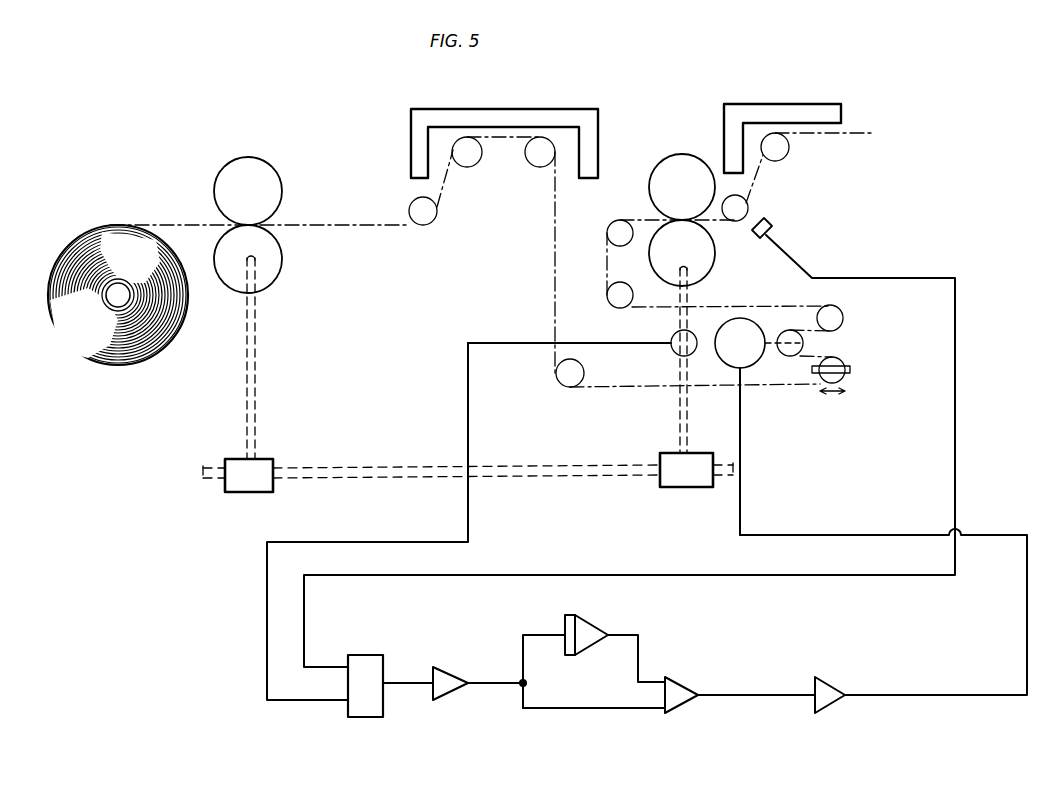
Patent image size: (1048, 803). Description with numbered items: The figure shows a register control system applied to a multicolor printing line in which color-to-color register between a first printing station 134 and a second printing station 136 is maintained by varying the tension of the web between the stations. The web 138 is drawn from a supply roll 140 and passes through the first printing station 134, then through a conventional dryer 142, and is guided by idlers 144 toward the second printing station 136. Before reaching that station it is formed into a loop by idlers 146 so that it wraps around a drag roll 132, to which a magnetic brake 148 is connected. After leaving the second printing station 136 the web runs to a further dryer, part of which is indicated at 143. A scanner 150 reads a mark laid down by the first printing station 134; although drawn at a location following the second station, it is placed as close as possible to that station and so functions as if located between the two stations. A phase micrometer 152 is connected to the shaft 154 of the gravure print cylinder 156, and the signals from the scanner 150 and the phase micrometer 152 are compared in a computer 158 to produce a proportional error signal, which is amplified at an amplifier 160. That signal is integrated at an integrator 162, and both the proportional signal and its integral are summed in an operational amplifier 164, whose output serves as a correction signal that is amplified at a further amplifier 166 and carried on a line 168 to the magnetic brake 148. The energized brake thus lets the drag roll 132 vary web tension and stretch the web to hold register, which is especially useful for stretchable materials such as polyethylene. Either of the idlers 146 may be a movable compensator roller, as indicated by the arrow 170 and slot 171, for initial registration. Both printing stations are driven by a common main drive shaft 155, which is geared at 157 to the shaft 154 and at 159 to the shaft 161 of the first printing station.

The drag roll 132 is at (803, 343).
The first printing station 134 is at (270, 168).
The second printing station 136 is at (680, 154).
The web 138 is at (362, 221).
The supply roll 140 is at (150, 364).
The dryer 142 is at (485, 109).
The dryer 143 is at (778, 104).
The idlers 144 is at (607, 235).
The idlers 146 is at (843, 318).
The magnetic brake 148 is at (758, 333).
The scanner 150 is at (775, 228).
The phase micrometer 152 is at (672, 337).
The shaft 154 is at (693, 300).
The main drive shaft 155 is at (528, 473).
The gravure print cylinder 156 is at (714, 262).
The gearing 157 is at (683, 488).
The computer 158 is at (362, 655).
The gearing 159 is at (240, 493).
The amplifier 160 is at (445, 670).
The shaft 161 is at (257, 335).
The integrator 162 is at (585, 627).
The operational amplifier 164 is at (680, 680).
The amplifier 166 is at (832, 680).
The line 168 is at (862, 535).
The arrow 170 is at (832, 392).
The slot 171 is at (850, 370).